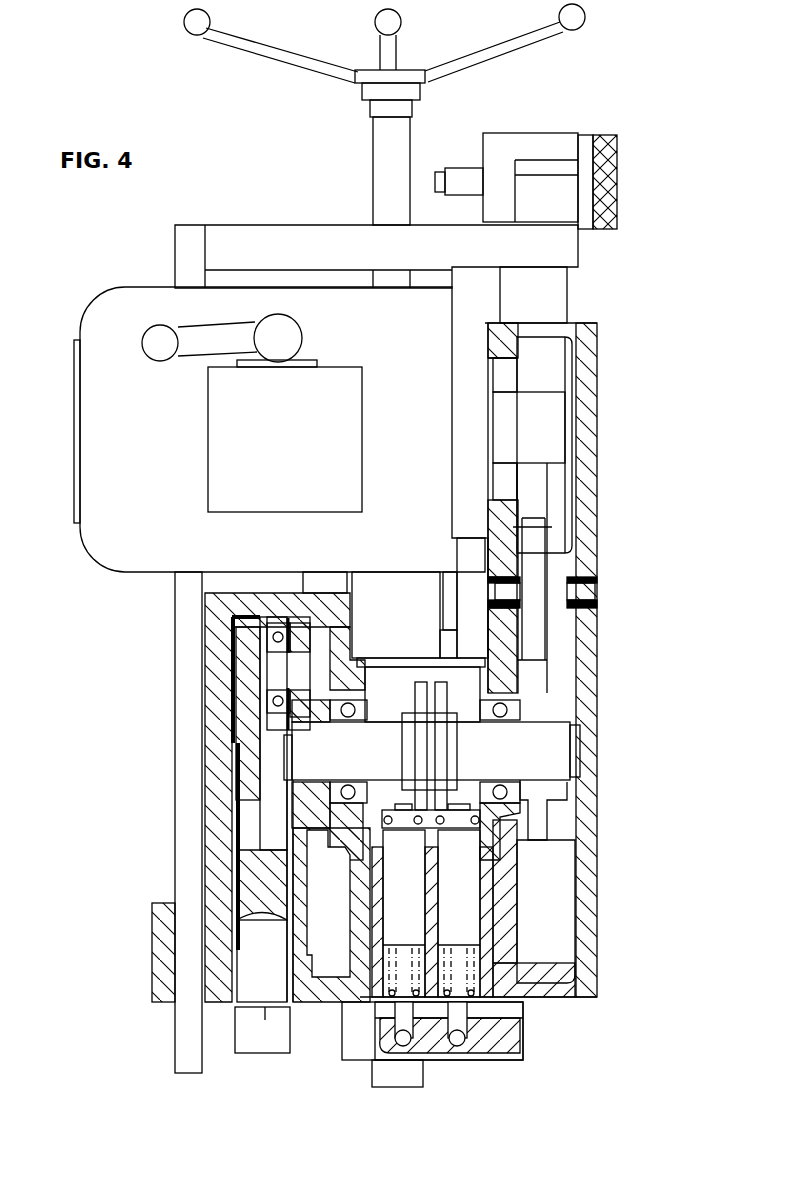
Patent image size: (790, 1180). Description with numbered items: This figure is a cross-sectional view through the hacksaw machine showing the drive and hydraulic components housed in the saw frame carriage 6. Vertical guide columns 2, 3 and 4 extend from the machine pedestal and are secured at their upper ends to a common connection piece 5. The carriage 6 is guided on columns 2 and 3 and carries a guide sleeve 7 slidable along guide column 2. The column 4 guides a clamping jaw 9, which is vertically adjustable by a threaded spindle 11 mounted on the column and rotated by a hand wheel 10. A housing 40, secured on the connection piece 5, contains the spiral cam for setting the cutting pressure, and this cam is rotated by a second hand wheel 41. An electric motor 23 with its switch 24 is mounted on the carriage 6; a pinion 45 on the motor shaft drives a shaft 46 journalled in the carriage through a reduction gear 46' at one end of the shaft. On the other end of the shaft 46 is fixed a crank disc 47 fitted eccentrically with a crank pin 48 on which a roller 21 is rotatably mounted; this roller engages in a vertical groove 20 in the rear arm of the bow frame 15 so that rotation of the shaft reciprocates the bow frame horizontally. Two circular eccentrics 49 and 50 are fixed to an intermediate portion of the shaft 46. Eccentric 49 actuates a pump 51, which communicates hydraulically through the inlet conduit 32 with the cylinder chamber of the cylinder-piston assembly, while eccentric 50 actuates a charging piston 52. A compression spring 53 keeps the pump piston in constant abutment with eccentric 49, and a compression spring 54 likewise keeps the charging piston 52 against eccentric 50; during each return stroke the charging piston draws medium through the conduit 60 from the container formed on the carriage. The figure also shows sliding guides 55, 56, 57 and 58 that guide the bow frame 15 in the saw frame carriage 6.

The vertical guide column 2 is at (190, 588).
The vertical guide column 3 is at (557, 292).
The vertical guide column 4 is at (372, 1085).
The common connection piece 5 is at (215, 248).
The saw frame carriage 6 is at (320, 990).
The guide sleeve 7 is at (165, 953).
The clamping jaw 9 is at (380, 590).
The hand wheel 10 is at (197, 38).
The threaded spindle 11 is at (385, 145).
The bow frame 15 is at (250, 876).
The vertical groove 20 is at (275, 775).
The roller 21 is at (260, 712).
The electric motor 23 is at (100, 352).
The switch 24 is at (220, 396).
The inlet conduit 32 is at (457, 1022).
The housing 40 is at (515, 148).
The hand wheel 41 is at (617, 157).
The pinion 45 is at (550, 410).
The shaft 46 is at (471, 751).
The reduction gear 46' is at (580, 660).
The crank disc 47 is at (280, 808).
The crank pin 48 is at (280, 672).
The circular eccentric 49 is at (442, 700).
The circular eccentric 50 is at (420, 772).
The pump 51 is at (467, 867).
The charging piston 52 is at (405, 843).
The compression spring 53 is at (470, 953).
The compression spring 54 is at (440, 1030).
The sliding guide 55 is at (245, 648).
The sliding guide 56 is at (233, 1005).
The sliding guide 57 is at (287, 1003).
The sliding guide 58 is at (235, 618).
The conduit 60 is at (402, 1046).